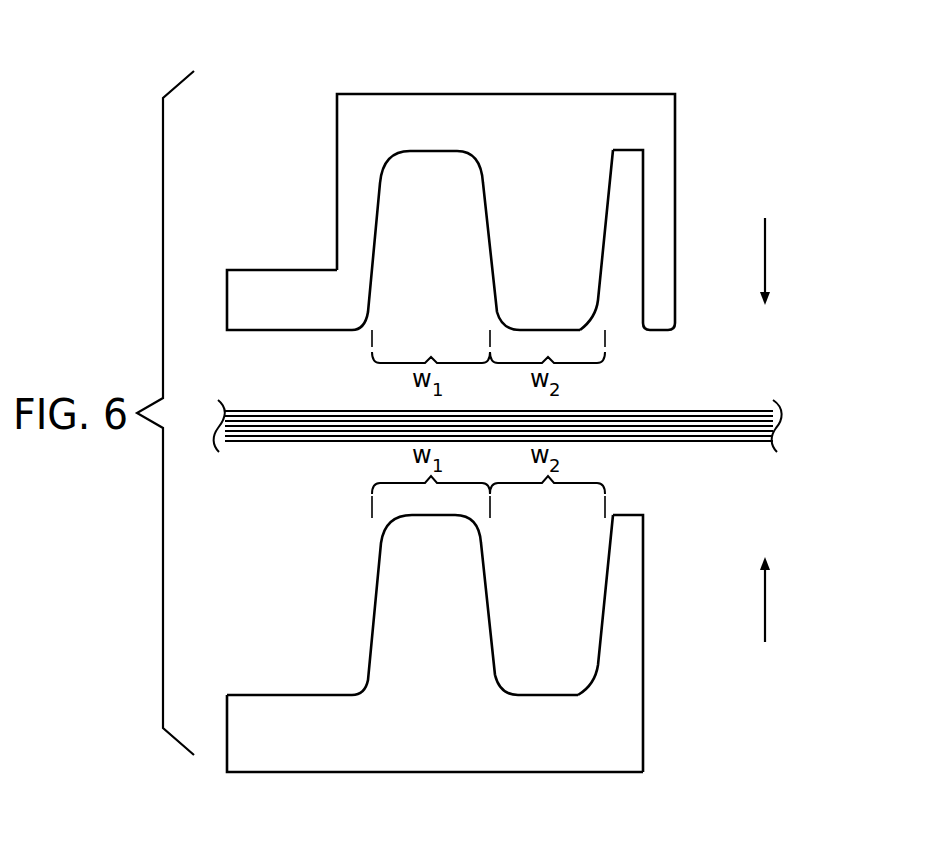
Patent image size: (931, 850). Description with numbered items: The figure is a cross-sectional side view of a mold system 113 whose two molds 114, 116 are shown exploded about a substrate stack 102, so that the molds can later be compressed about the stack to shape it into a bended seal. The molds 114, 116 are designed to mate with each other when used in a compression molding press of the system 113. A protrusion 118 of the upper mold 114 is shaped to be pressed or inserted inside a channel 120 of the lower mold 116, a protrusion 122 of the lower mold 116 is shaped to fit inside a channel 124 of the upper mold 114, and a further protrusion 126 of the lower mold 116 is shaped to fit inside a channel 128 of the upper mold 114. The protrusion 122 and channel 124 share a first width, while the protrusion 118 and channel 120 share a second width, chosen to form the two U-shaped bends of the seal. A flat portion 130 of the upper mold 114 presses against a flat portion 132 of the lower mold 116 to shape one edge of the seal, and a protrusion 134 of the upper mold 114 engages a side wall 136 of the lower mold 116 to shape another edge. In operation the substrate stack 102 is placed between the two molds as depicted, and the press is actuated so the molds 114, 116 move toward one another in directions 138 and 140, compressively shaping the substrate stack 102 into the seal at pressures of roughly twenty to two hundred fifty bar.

The substrate stack 102 is at (713, 410).
The mold system 113 is at (745, 111).
The mold 114 is at (582, 94).
The mold 116 is at (317, 772).
The protrusion 118 is at (569, 291).
The channel 120 is at (569, 605).
The protrusion 122 is at (456, 605).
The channel 124 is at (458, 291).
The protrusion 126 is at (625, 613).
The channel 128 is at (623, 257).
The flat portion 130 is at (297, 333).
The flat portion 132 is at (292, 695).
The protrusion 134 is at (662, 277).
The side wall 136 is at (643, 692).
The direction 138 is at (766, 253).
The direction 140 is at (766, 605).